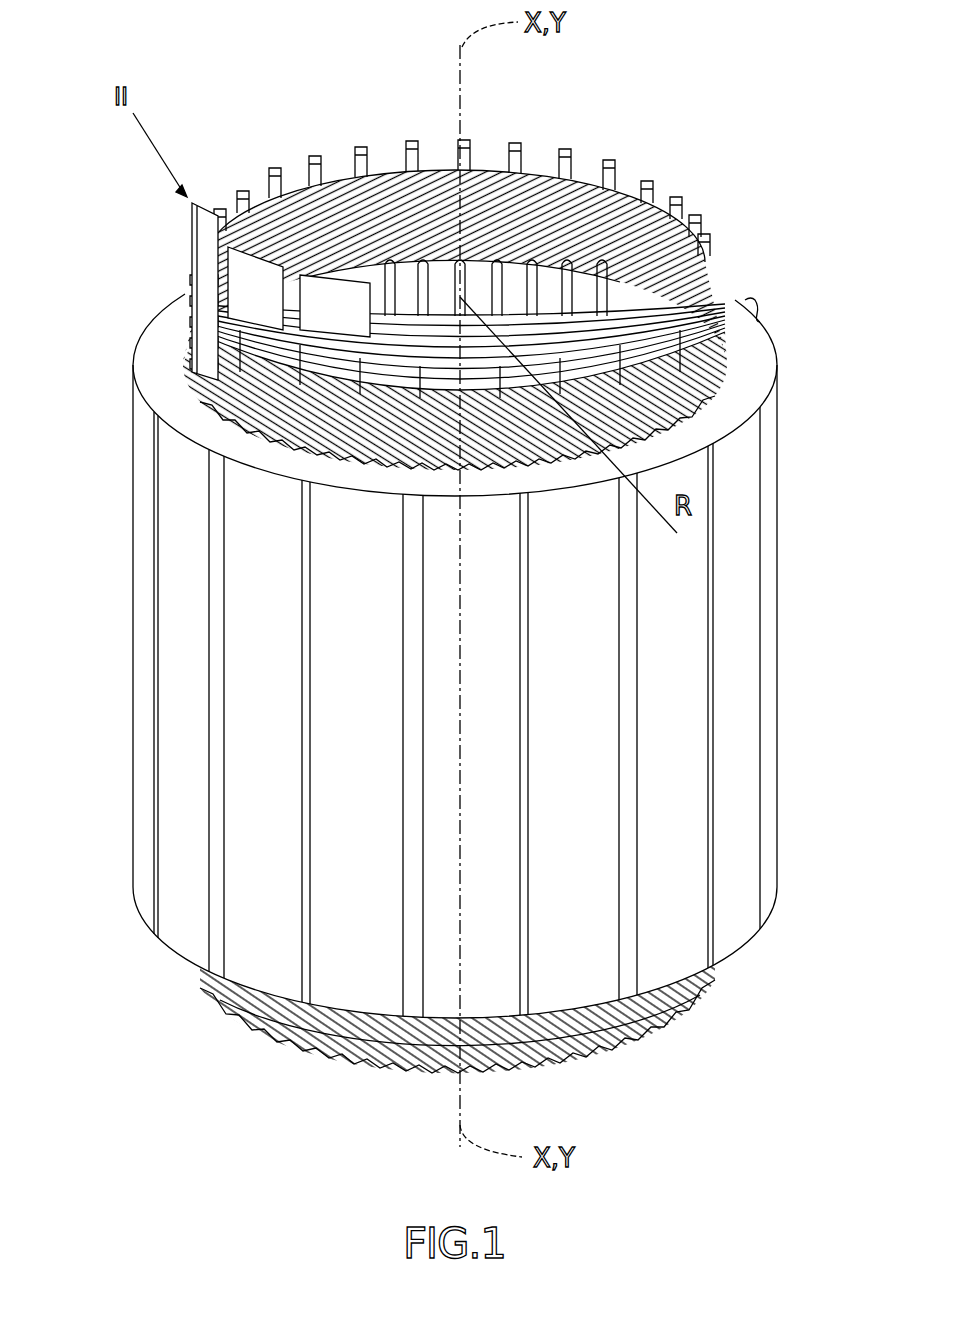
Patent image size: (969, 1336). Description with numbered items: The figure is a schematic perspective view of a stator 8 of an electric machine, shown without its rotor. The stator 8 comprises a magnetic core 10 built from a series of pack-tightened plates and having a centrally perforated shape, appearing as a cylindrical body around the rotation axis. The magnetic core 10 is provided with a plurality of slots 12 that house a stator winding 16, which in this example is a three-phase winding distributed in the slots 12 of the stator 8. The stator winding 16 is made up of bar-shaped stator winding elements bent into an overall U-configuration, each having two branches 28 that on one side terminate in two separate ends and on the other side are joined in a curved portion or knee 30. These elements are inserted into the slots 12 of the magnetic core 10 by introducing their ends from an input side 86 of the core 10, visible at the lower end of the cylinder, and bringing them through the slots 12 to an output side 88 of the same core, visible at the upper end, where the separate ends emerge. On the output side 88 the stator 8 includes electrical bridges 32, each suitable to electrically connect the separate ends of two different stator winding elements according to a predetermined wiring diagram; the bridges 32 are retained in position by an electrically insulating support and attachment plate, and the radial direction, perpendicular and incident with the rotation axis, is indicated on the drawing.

The stator 8 is at (449, 607).
The magnetic core 10 is at (148, 793).
The slots 12 is at (268, 443).
The stator winding 16 is at (409, 1072).
The branches 28 is at (772, 395).
The curved portion or knee 30 is at (322, 1055).
The electrical bridge 32 is at (328, 303).
The input side 86 is at (457, 1072).
The output side 88 is at (455, 252).